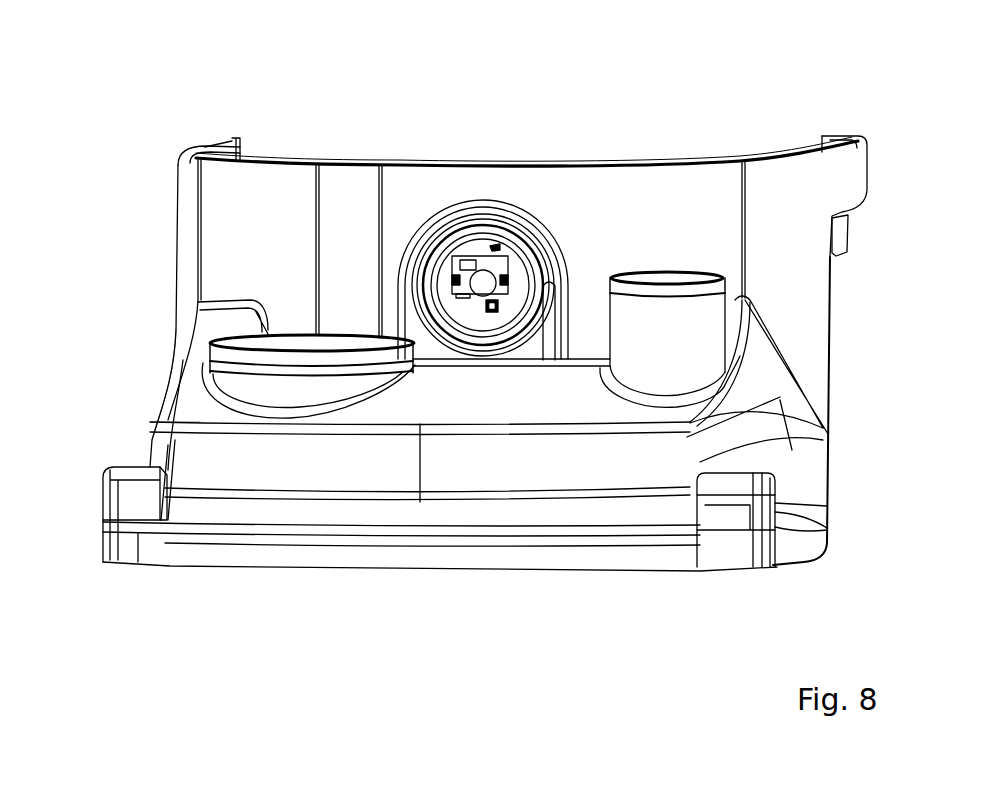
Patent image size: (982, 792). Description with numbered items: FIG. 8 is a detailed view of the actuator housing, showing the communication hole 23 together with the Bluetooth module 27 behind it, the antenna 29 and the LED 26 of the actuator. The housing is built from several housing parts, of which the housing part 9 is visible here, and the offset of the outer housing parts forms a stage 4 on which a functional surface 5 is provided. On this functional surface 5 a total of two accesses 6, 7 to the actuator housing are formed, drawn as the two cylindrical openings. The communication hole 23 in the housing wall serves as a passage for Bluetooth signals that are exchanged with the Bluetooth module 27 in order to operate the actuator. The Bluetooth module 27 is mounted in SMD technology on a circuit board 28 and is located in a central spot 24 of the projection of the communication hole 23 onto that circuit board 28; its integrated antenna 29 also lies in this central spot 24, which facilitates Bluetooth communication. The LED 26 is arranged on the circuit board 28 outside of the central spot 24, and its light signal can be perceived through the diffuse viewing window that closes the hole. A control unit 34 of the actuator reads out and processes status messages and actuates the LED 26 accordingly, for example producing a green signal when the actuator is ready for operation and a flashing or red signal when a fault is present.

The stage 4 is at (200, 150).
The functional surface 5 is at (187, 392).
The access 6 is at (243, 337).
The access 7 is at (677, 262).
The housing part 9 is at (187, 453).
The communication hole 23 is at (446, 238).
The central spot 24 is at (500, 262).
The LED 26 is at (498, 306).
The Bluetooth module 27 is at (450, 250).
The circuit board 28 is at (497, 247).
The integrated antenna 29 is at (481, 283).
The control unit 34 is at (470, 186).